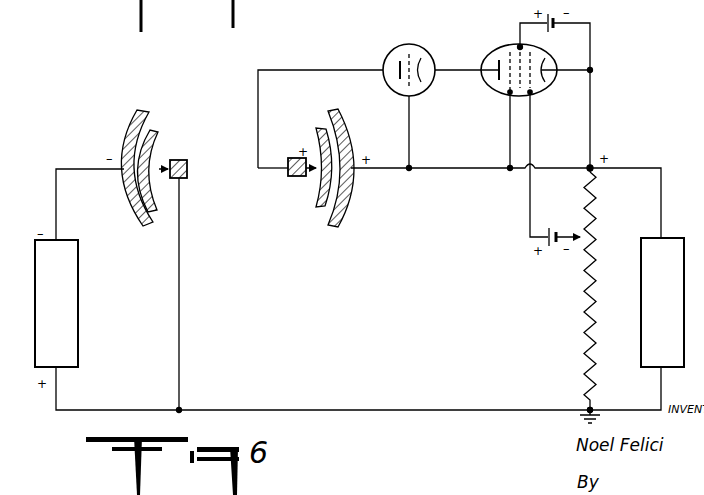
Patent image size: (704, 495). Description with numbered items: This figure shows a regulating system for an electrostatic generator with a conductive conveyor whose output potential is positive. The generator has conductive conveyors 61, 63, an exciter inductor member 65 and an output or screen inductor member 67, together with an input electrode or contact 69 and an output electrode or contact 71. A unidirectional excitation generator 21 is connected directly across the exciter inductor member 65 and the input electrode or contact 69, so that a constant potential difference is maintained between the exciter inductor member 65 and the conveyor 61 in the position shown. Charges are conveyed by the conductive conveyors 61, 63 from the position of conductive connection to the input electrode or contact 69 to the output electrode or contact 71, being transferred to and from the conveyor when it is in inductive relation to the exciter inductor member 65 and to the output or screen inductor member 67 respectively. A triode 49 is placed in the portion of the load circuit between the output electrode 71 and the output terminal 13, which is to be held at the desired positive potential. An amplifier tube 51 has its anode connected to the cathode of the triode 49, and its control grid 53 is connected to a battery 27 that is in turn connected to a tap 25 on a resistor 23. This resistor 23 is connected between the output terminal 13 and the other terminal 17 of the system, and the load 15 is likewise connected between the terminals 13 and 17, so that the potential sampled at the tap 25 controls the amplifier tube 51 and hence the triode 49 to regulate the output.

The output terminal 13 is at (594, 171).
The load 15 is at (684, 252).
The other terminal 17 is at (588, 406).
The unidirectional excitation generator 21 is at (78, 270).
The resistor 23 is at (586, 306).
The tap 25 is at (584, 240).
The battery 27 is at (549, 229).
The triode 49 is at (420, 50).
The amplifier tube 51 is at (494, 93).
The control grid 53 is at (536, 84).
The conductive conveyor 61 is at (163, 138).
The conductive conveyor 63 is at (319, 189).
The exciter inductor member 65 is at (131, 124).
The output or screen inductor member 67 is at (346, 134).
The input electrode or contact 69 is at (186, 178).
The output electrode or contact 71 is at (293, 157).